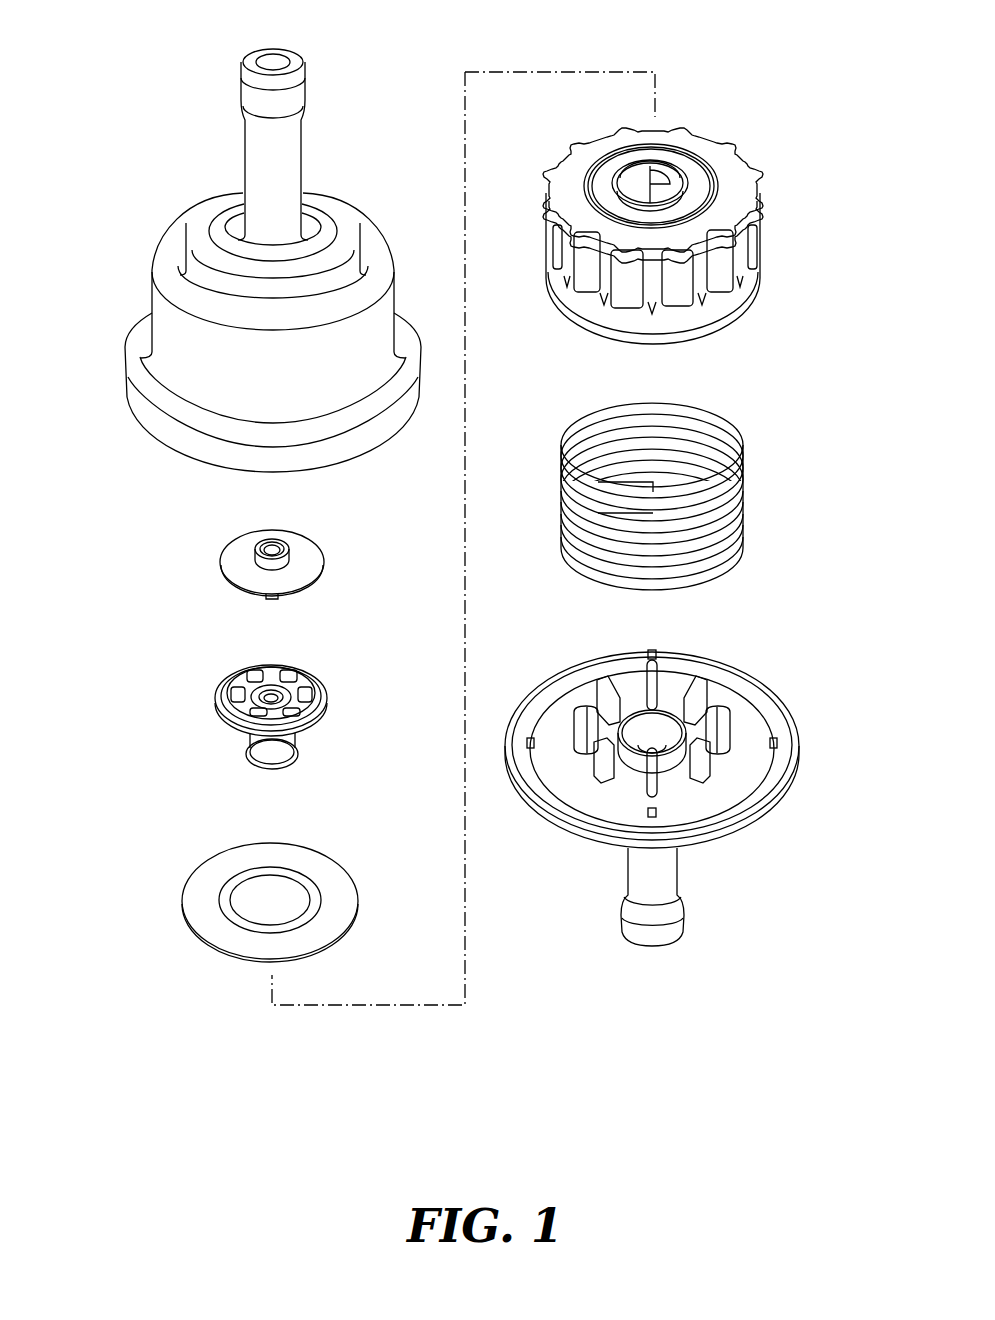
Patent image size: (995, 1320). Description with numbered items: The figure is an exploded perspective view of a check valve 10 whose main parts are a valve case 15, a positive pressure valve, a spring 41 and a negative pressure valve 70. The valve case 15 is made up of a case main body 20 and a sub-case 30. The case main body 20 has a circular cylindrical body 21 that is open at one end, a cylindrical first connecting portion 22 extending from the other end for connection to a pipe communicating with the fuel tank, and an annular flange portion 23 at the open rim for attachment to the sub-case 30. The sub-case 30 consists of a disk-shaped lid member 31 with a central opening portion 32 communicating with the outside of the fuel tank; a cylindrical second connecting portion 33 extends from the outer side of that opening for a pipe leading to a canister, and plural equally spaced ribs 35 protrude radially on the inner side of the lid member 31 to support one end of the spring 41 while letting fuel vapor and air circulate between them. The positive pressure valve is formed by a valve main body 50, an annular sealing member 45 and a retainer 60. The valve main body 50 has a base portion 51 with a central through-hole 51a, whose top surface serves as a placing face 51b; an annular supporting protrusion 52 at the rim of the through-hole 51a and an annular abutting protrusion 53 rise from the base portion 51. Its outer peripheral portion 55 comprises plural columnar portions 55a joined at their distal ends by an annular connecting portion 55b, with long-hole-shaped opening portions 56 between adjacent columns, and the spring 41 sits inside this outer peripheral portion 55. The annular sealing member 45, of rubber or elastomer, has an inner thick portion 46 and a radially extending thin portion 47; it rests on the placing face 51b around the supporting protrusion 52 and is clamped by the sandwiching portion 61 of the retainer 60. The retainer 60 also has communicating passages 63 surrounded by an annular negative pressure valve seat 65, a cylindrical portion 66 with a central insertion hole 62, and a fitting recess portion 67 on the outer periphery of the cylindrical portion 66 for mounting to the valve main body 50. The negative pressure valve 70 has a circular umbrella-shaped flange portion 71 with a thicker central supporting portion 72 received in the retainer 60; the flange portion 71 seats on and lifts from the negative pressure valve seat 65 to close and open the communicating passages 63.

The check valve 10 is at (205, 148).
The valve case 15 is at (162, 1104).
The case main body 20 is at (187, 474).
The cylindrical body 21 is at (162, 328).
The first connecting portion 22 is at (298, 148).
The annular flange portion 23 is at (167, 403).
The sub-case 30 is at (600, 925).
The lid member 31 is at (730, 803).
The opening portion 32 is at (656, 728).
The second connecting portion 33 is at (668, 872).
The ribs 35 is at (582, 718).
The spring 41 is at (745, 549).
The annular sealing member 45 is at (362, 866).
The thick portion 46 is at (240, 922).
The thin portion 47 is at (352, 905).
The valve main body 50 is at (679, 118).
The base portion 51 is at (720, 146).
The through-hole 51a is at (667, 166).
The placing face 51b is at (722, 178).
The supporting protrusion 52 is at (625, 161).
The abutting protrusion 53 is at (593, 168).
The outer peripheral portion 55 is at (770, 211).
The columnar portions 55a is at (737, 268).
The connecting portion 55b is at (740, 302).
The opening portions 56 is at (722, 305).
The retainer 60 is at (334, 688).
The sandwiching portion 61 is at (229, 724).
The insertion hole 62 is at (272, 690).
The communicating passages 63 is at (259, 672).
The negative pressure valve seat 65 is at (255, 672).
The cylindrical portion 66 is at (296, 760).
The fitting recess portion 67 is at (293, 746).
The negative pressure valve 70 is at (336, 530).
The flange portion 71 is at (315, 568).
The supporting portion 72 is at (282, 545).